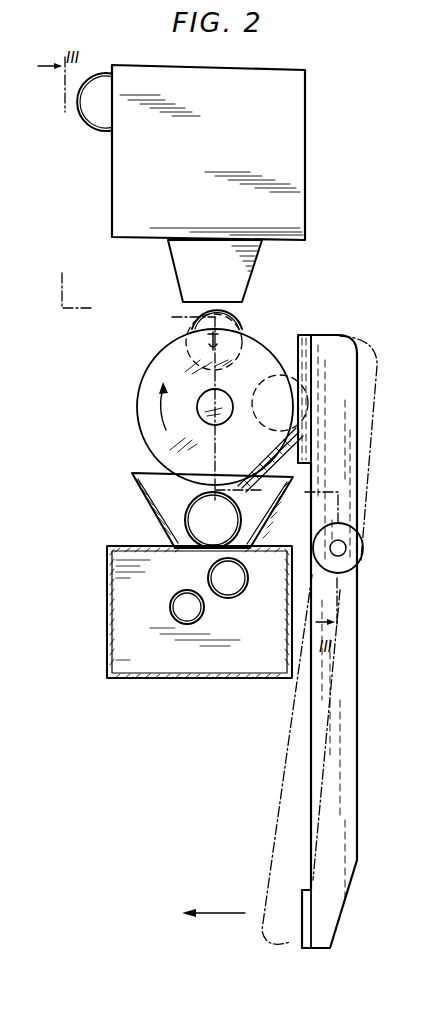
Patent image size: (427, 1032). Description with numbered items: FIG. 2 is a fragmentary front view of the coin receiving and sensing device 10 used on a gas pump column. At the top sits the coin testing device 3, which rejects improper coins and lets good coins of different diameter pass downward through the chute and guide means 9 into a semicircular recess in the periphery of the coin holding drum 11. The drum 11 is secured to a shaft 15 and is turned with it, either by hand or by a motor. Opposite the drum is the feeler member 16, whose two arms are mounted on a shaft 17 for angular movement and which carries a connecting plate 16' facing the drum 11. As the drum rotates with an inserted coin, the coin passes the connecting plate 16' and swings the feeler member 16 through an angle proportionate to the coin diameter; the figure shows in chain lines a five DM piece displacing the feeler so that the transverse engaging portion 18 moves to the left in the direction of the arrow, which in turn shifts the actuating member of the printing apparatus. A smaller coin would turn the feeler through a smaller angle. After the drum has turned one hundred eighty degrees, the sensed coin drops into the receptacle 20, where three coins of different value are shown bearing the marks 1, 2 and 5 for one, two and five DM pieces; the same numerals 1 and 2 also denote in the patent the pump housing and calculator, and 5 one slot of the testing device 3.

The coin testing device 3 is at (288, 115).
The slot 5 is at (181, 310).
The chute and guide means 9 is at (190, 258).
The coin receiving and sensing device 10 is at (134, 381).
The coin holding drum 11 is at (171, 352).
The shaft 15 is at (222, 412).
The feeler member 16 is at (328, 641).
The connecting plate 16' is at (289, 386).
The shaft 17 is at (346, 548).
The transverse engaging portion 18 is at (302, 932).
The receptacle 20 is at (232, 661).
The housing 1 is at (187, 607).
The calculator 2 is at (228, 578).